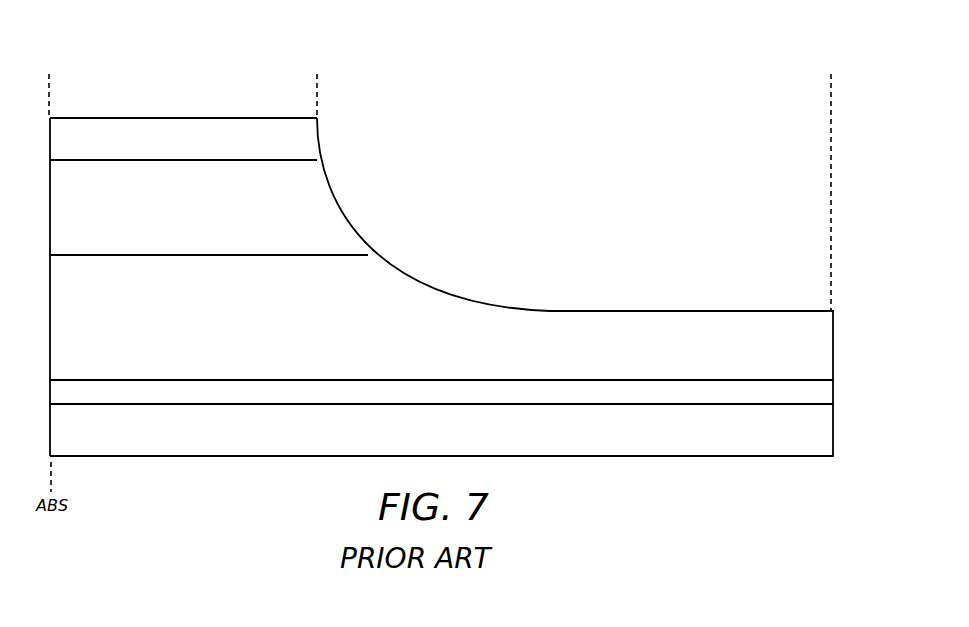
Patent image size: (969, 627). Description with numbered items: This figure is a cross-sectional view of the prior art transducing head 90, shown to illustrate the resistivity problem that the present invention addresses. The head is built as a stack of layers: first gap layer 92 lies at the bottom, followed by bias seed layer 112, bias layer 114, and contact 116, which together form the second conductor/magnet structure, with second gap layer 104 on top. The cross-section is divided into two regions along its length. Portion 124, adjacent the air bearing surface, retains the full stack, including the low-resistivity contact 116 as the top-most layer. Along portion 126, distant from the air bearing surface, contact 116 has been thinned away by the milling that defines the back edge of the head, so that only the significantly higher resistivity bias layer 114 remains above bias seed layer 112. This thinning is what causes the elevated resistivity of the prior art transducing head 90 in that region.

The prior art transducing head 90 is at (697, 44).
The second gap layer 104 is at (100, 151).
The contact 116 is at (100, 216).
The bias layer 114 is at (100, 316).
The bias seed layer 112 is at (100, 405).
The first gap layer 92 is at (99, 438).
The portion 124 is at (317, 87).
The portion 126 is at (831, 86).